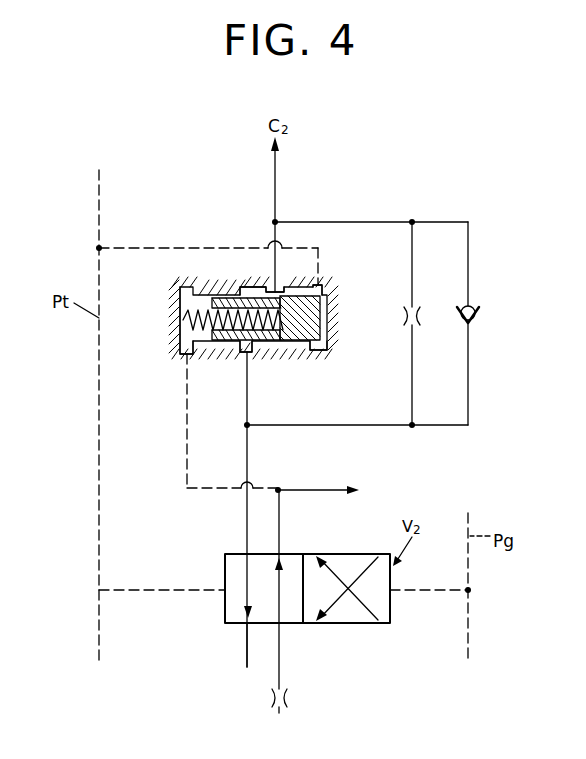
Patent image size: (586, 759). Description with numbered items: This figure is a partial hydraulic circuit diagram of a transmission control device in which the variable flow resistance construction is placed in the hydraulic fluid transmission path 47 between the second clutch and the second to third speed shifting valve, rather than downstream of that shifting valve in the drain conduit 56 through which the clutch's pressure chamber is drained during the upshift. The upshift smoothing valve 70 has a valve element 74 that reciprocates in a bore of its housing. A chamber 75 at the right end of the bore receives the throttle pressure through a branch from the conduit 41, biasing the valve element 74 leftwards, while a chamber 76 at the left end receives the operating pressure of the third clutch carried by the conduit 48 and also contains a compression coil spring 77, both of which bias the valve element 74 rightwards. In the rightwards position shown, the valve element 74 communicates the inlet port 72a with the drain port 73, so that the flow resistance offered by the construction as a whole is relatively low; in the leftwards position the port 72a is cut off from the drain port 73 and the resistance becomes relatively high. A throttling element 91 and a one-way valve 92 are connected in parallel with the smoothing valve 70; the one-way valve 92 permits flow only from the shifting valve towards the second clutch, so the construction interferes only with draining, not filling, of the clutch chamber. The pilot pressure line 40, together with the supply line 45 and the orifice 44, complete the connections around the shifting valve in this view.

The pilot pressure line Pg 40 is at (472, 620).
The conduit 41 is at (99, 378).
The orifice 44 is at (291, 697).
The supply line 45 is at (280, 650).
The hydraulic fluid transmission path 47 is at (275, 172).
The conduit 48 is at (336, 489).
The conduit 56 is at (247, 650).
The upshift smoothing valve 70 is at (245, 334).
The inlet port 72a is at (268, 281).
The drain port 73 is at (246, 356).
The valve element 74 is at (325, 306).
The chamber 75 is at (330, 348).
The chamber 76 is at (180, 302).
The compression coil spring 77 is at (180, 328).
The throttling element 91 is at (418, 310).
The one-way valve 92 is at (481, 314).